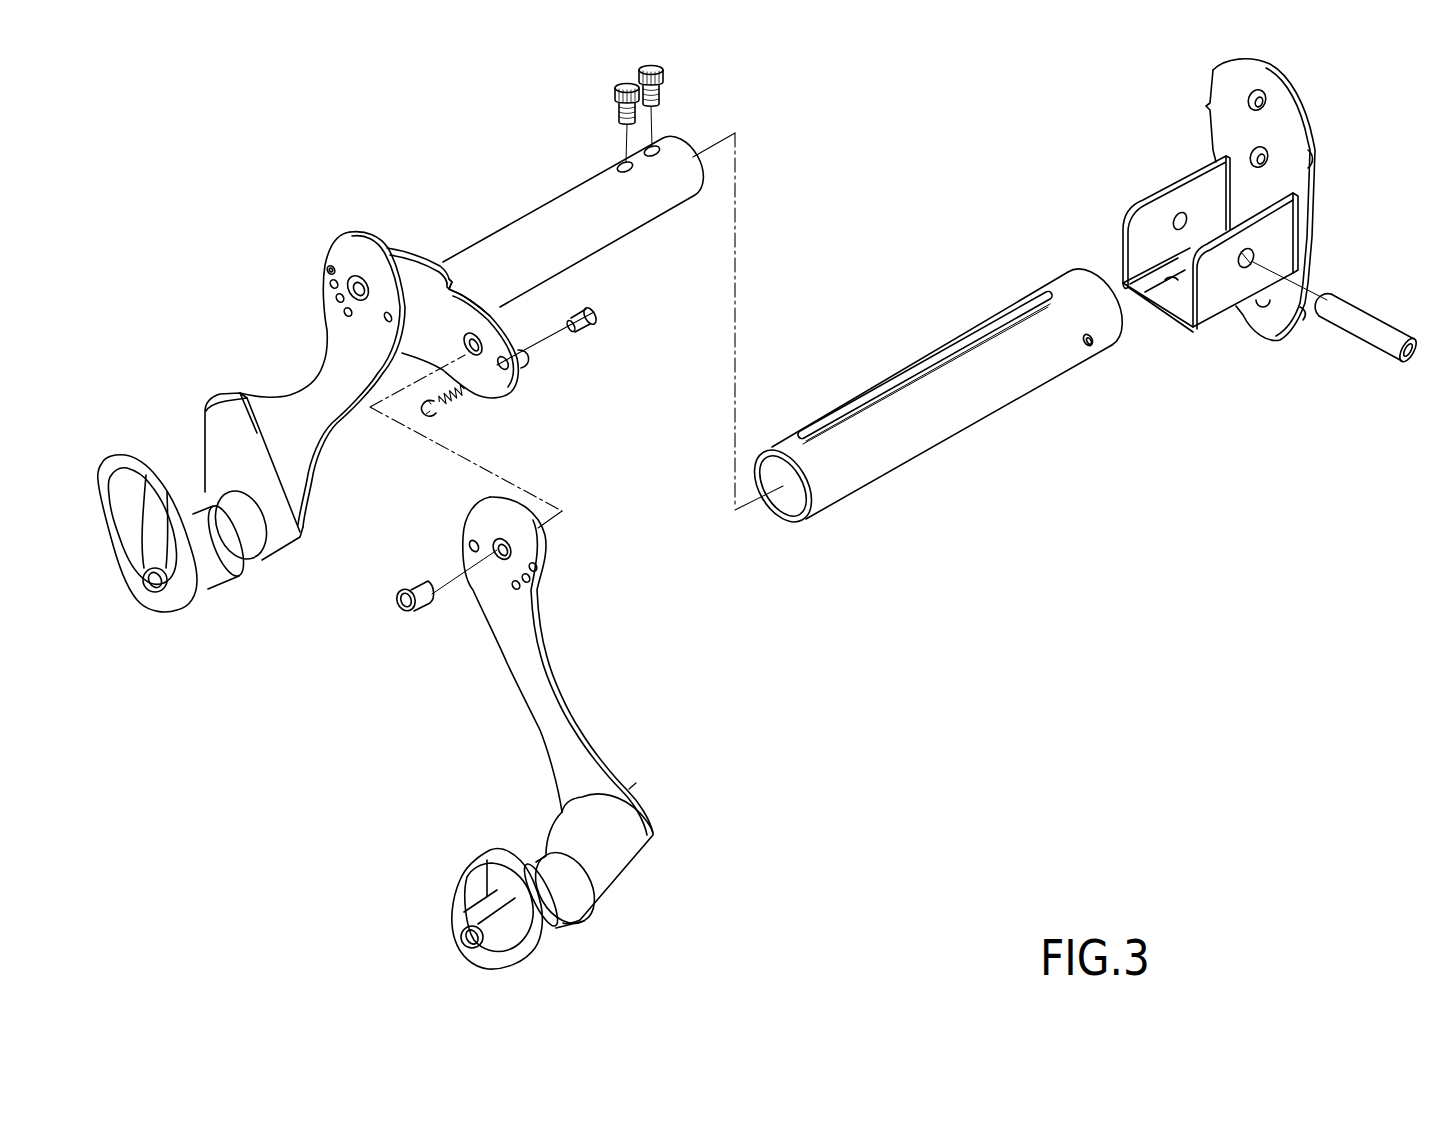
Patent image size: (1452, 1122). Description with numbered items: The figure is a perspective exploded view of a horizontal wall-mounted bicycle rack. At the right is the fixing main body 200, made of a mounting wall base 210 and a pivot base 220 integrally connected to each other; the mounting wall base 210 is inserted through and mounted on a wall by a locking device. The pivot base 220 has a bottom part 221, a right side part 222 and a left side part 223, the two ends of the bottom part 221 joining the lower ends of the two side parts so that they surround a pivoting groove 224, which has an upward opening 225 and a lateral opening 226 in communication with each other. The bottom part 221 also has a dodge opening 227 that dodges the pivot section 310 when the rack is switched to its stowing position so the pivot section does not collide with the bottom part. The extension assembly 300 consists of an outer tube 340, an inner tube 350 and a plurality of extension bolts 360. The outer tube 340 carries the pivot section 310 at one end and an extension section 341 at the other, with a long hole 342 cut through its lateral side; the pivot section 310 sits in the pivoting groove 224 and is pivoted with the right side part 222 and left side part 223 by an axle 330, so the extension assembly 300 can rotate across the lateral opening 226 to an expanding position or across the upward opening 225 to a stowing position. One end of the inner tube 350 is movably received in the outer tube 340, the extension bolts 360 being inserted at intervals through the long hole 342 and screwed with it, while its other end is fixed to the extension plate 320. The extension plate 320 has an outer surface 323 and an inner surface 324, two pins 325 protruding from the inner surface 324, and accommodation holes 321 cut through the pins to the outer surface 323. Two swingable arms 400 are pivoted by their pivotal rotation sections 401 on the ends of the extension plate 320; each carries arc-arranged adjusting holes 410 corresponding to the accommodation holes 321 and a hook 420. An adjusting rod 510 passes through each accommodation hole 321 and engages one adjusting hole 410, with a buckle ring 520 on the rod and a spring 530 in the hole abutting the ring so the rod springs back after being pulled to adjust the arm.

The fixing main body 200 is at (1334, 117).
The mounting wall base 210 is at (1211, 87).
The pivot base 220 is at (1223, 336).
The bottom part 221 is at (1145, 303).
The right side part 222 is at (1291, 223).
The left side part 223 is at (1157, 197).
The pivoting groove 224 is at (1259, 187).
The upward opening 225 is at (1149, 194).
The lateral opening 226 is at (1129, 256).
The dodge opening 227 is at (1168, 300).
The extension assembly 300 is at (799, 186).
The pivot section 310 is at (1065, 285).
The extension plate 320 is at (404, 231).
The accommodation holes 321 is at (495, 378).
The outer surface 323 is at (452, 297).
The inner surface 324 is at (495, 302).
The pins 325 is at (531, 357).
The axle 330 is at (1345, 302).
The outer tube 340 is at (930, 450).
The extension section 341 is at (820, 500).
The long hole 342 is at (845, 417).
The inner tube 350 is at (600, 250).
The extension bolts 360 is at (641, 66).
The swingable arms 400 is at (312, 368).
The pivotal rotation section 401 is at (345, 247).
The adjusting holes 410 is at (328, 272).
The hook 420 is at (236, 555).
The adjusting rod 510 is at (599, 315).
The buckle ring 520 is at (436, 417).
The spring 530 is at (456, 395).